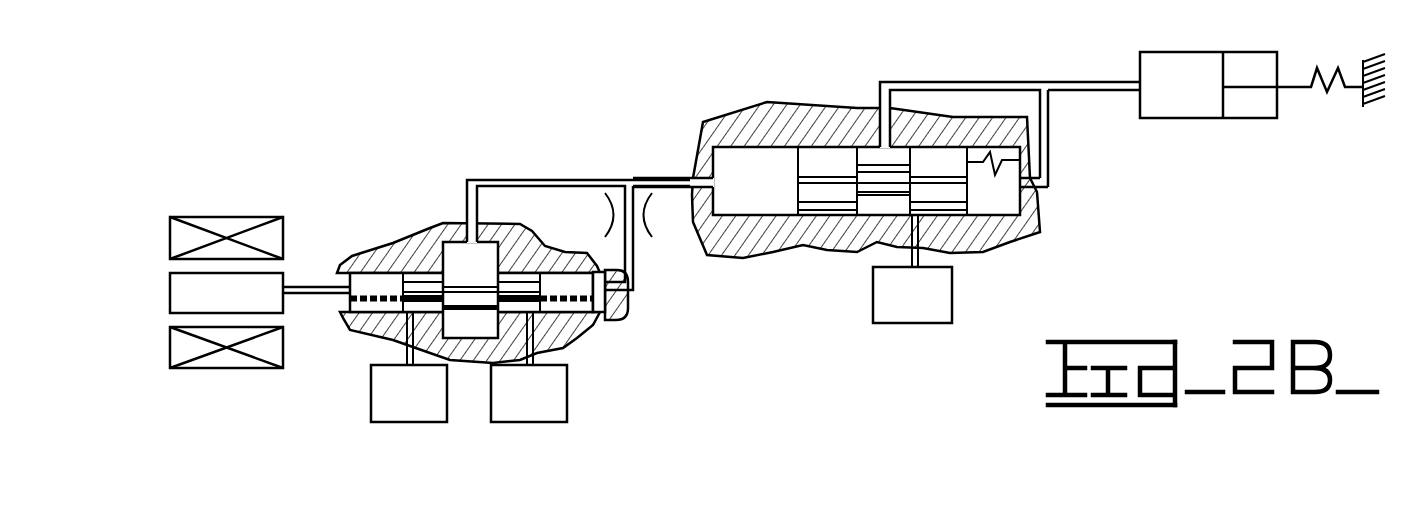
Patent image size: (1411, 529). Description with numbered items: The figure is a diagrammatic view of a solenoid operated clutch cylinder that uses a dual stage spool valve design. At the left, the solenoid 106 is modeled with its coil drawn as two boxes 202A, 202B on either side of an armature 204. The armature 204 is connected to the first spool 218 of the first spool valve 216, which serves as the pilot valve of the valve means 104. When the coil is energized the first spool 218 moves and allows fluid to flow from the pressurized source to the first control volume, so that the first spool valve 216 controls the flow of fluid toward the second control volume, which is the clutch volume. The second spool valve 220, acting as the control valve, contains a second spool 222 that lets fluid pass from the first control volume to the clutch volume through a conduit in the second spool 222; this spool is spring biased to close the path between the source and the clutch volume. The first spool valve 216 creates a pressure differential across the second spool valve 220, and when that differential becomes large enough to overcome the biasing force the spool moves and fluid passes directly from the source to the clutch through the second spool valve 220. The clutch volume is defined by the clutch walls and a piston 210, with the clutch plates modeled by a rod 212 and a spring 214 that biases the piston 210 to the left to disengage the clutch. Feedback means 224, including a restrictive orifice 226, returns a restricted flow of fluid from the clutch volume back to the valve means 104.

The solenoid 106 is at (117, 362).
The coil box 202A is at (218, 217).
The coil box 202B is at (224, 368).
The armature 204 is at (170, 295).
The valve means 104 is at (686, 340).
The first spool valve 216 is at (413, 240).
The first spool 218 is at (343, 302).
The restrictive orifice 226 is at (617, 215).
The feedback means 224 is at (675, 245).
The second spool valve 220 is at (797, 102).
The second spool 222 is at (793, 167).
The piston 210 is at (1222, 70).
The rod 212 is at (1240, 88).
The spring 214 is at (1327, 92).